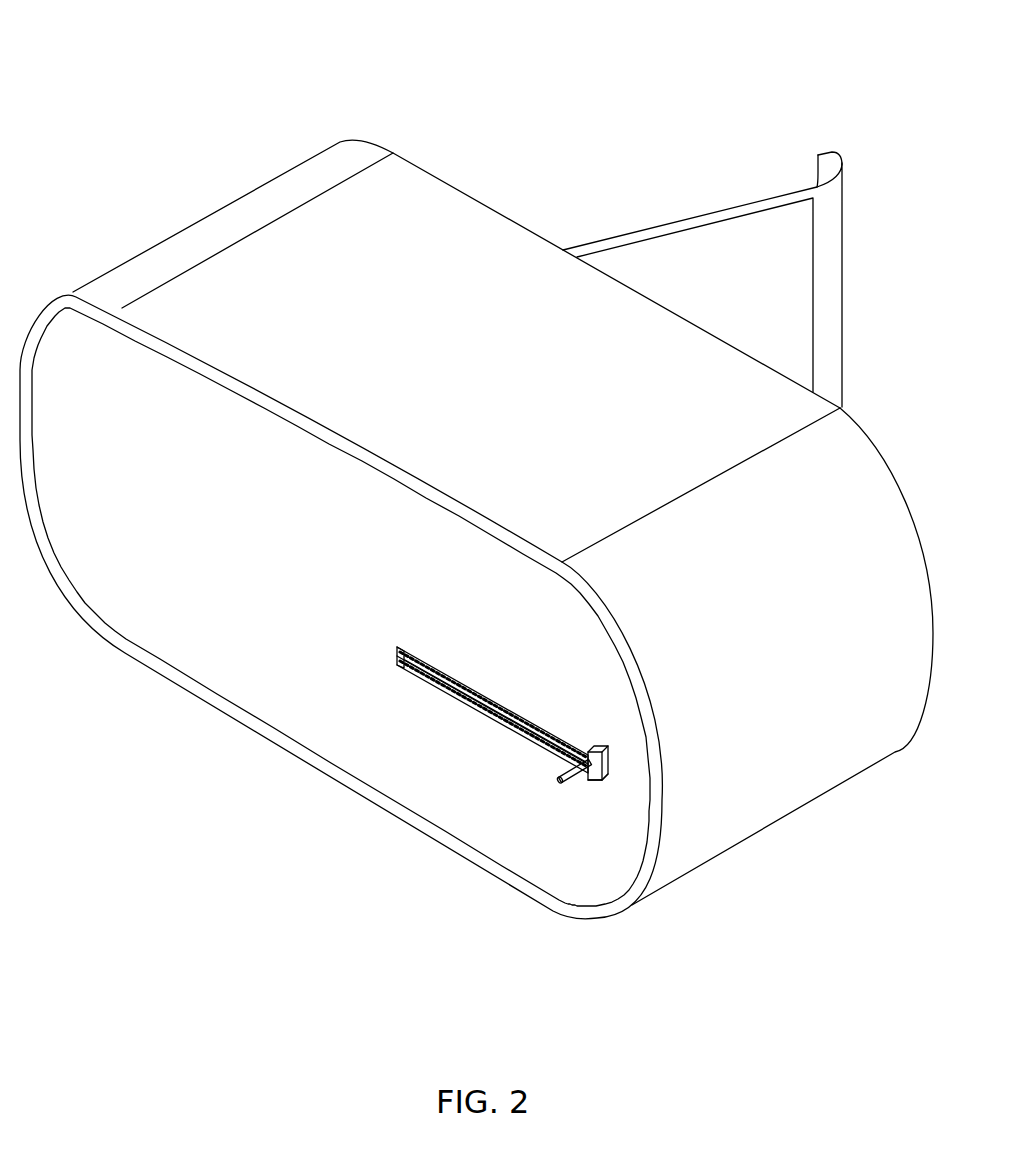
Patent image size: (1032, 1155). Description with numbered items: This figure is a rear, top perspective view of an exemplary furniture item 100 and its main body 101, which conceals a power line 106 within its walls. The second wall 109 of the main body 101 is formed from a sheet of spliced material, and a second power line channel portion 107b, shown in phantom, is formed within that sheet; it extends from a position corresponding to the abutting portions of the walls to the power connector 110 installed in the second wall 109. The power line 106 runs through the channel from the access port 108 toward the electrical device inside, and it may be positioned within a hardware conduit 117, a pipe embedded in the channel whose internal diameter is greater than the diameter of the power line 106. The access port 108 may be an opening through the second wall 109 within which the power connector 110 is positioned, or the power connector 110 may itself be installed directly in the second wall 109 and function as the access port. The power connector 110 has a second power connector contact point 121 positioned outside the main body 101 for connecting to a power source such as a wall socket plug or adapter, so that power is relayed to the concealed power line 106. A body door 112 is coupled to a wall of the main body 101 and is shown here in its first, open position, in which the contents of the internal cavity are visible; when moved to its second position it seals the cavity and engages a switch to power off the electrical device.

The furniture item 100 is at (772, 87).
The main body 101 is at (372, 347).
The body door 112 is at (723, 283).
The second wall 109 is at (274, 672).
The power line 106 is at (462, 685).
The hardware conduit 117 is at (408, 665).
The second power line channel portion 107b is at (490, 715).
The access port 108 is at (604, 738).
The second power connector contact point 121 is at (563, 780).
The power connector 110 is at (597, 773).